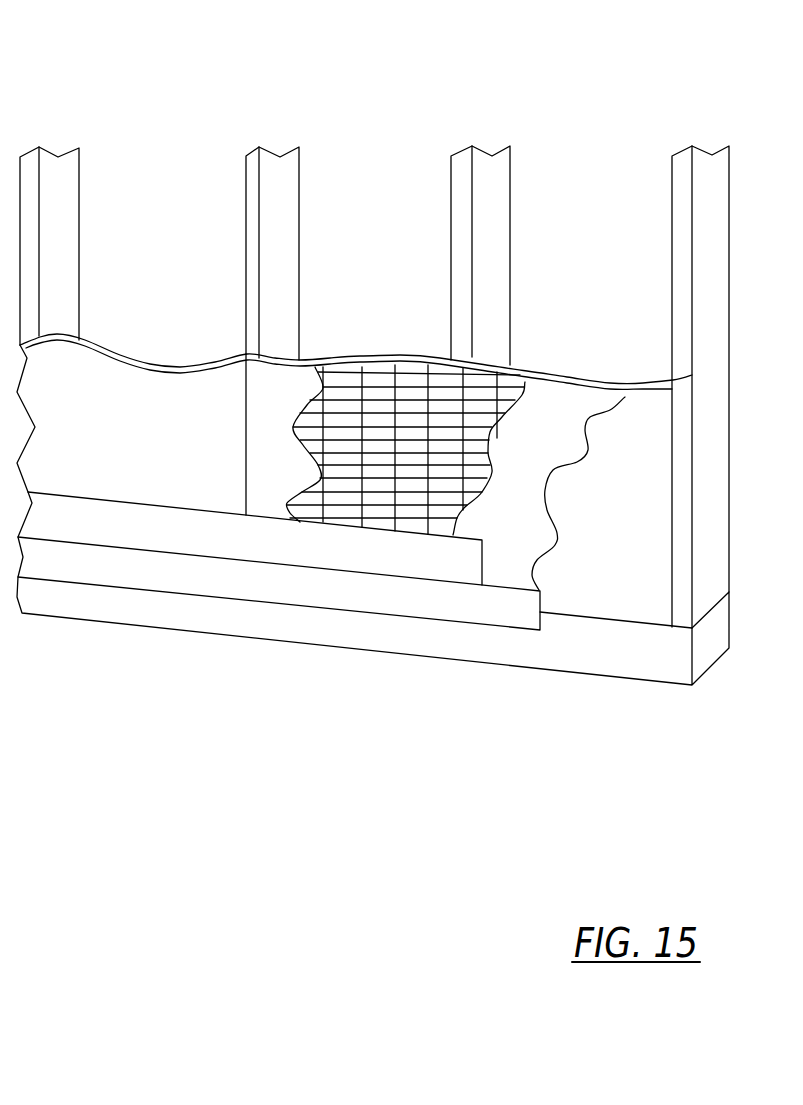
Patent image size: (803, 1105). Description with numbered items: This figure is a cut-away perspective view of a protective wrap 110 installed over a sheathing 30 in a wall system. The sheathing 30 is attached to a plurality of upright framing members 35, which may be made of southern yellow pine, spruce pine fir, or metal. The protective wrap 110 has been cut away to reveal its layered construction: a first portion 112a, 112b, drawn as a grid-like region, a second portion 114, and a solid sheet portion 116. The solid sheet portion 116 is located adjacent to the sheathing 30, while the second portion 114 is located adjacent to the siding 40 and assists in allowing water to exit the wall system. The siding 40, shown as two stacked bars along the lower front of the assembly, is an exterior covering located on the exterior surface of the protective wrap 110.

The sheathing 30 is at (623, 511).
The framing members 35 is at (57, 156).
The siding 40 is at (138, 538).
The protective wrap 110 is at (425, 340).
The first portion 112a is at (333, 383).
The first portion 112b is at (395, 383).
The second portion 114 is at (291, 411).
The solid sheet portion 116 is at (510, 463).